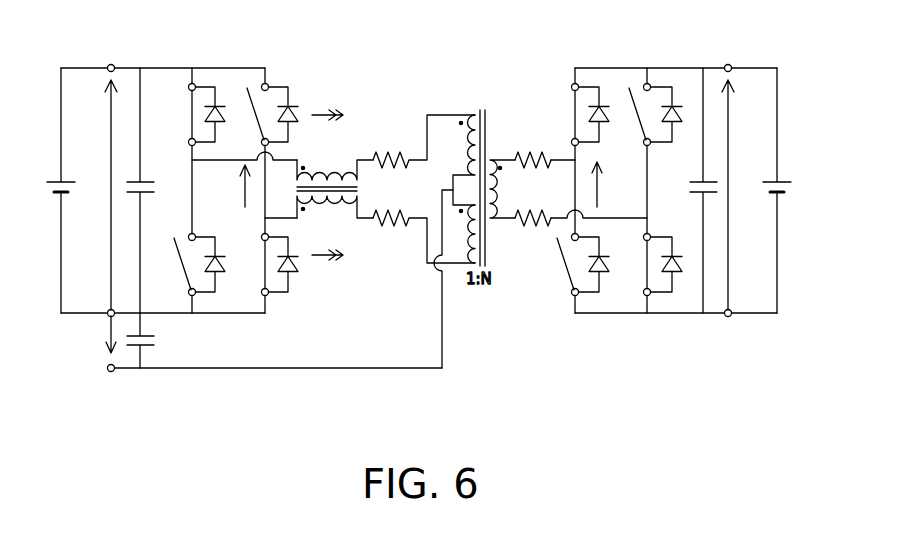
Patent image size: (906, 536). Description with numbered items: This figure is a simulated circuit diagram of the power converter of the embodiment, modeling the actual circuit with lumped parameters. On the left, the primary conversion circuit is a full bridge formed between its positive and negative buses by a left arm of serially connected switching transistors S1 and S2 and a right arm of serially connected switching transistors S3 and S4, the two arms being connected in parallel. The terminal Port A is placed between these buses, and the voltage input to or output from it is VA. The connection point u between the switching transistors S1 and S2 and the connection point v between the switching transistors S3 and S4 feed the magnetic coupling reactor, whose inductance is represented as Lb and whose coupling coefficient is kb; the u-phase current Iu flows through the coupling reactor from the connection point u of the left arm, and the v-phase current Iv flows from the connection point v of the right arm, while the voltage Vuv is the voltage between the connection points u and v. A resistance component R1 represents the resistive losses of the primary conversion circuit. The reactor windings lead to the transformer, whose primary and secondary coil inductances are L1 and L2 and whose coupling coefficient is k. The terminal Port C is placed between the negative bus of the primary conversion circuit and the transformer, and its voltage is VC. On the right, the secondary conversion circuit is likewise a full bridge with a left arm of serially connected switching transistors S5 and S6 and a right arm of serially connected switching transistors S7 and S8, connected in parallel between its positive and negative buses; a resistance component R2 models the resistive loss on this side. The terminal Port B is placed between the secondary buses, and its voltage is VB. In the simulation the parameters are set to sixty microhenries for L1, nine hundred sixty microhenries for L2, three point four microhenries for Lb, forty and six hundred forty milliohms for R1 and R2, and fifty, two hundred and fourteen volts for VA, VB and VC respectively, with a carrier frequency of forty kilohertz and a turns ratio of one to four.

The switching transistor S1 is at (192, 115).
The switching transistor S2 is at (190, 265).
The switching transistor S3 is at (263, 115).
The switching transistor S4 is at (263, 265).
The switching transistor S5 is at (577, 115).
The switching transistor S6 is at (573, 265).
The switching transistor S7 is at (646, 115).
The switching transistor S8 is at (647, 265).
The resistance component R1 is at (424, 189).
The resistance component R2 is at (531, 194).
The primary coil inductance L1 is at (446, 241).
The secondary coil inductance L2 is at (506, 189).
The magnetic coupling reactor inductance Lb is at (335, 192).
The coupling coefficient of the magnetic coupling reactor kb is at (313, 189).
The transformer coupling coefficient k is at (481, 181).
The port A voltage VA is at (100, 190).
The port B voltage VB is at (740, 190).
The port C voltage VC is at (116, 340).
The voltage between connection points u and v Vuv is at (229, 188).
The u-phase current Iu is at (327, 107).
The v-phase current Iv is at (327, 267).
The connection point u is at (234, 161).
The connection point v is at (274, 219).
The port A Port A is at (89, 55).
The port B Port B is at (744, 177).
The port C Port C is at (86, 354).